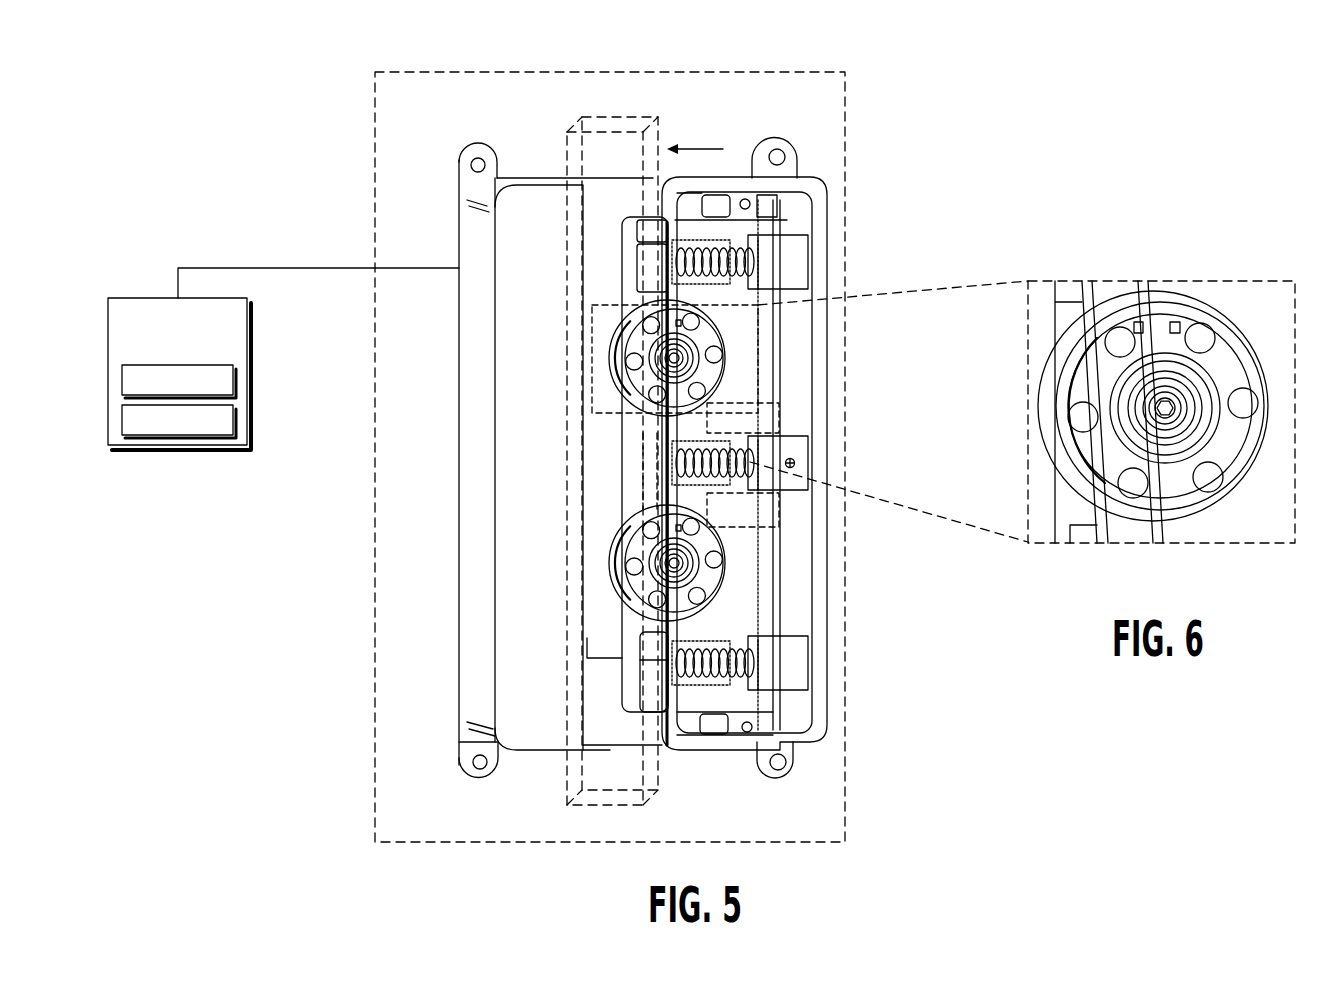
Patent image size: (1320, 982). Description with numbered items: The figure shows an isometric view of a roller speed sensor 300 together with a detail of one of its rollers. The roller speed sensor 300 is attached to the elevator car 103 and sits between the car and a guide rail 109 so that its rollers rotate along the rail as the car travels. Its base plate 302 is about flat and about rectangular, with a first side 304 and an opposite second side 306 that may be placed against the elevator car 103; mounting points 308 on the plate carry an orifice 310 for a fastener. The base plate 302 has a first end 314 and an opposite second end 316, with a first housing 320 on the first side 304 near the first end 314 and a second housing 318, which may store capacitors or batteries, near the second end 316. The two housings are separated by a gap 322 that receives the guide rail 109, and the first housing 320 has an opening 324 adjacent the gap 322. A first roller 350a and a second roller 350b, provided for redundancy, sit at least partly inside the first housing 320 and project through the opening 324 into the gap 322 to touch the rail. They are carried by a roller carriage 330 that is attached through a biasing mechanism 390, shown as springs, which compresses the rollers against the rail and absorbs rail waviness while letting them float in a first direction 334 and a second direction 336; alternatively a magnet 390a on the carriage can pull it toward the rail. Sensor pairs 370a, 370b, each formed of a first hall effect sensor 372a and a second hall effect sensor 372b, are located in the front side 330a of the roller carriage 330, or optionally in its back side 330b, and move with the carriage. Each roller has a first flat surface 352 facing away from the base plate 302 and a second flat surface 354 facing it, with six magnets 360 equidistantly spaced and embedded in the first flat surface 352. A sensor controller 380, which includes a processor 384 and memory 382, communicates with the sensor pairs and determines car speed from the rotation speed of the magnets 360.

In FIG. 5, the elevator car 103 is at (610, 422).
In FIG. 5, the roller speed sensor 300 is at (415, 133).
In FIG. 5, the guide rail 109 is at (584, 117).
In FIG. 5, the second side 306 is at (524, 460).
In FIG. 5, the second end 316 is at (458, 378).
In FIG. 5, the second housing 318 is at (497, 560).
In FIG. 5, the first housing 320 is at (779, 446).
In FIG. 6, the first housing 320 is at (1174, 528).
In FIG. 5, the first end 314 is at (817, 732).
In FIG. 5, the second direction 336 is at (798, 150).
In FIG. 5, the first direction 334 is at (693, 148).
In FIG. 5, the orifice 310 is at (773, 778).
In FIG. 5, the mounting point 308 is at (758, 760).
In FIG. 5, the gap 322 is at (603, 479).
In FIG. 5, the opening 324 is at (662, 747).
In FIG. 5, the first side 304 is at (604, 644).
In FIG. 5, the base plate 302 is at (608, 727).
In FIG. 5, the roller carriage 330 is at (640, 300).
In FIG. 6, the roller carriage 330 is at (1080, 283).
In FIG. 5, the front side 330a is at (637, 260).
In FIG. 5, the back side 330b is at (617, 275).
In FIG. 5, the biasing mechanism 390 is at (752, 268).
In FIG. 5, the magnet 390a is at (668, 513).
In FIG. 5, the first roller 350a is at (623, 382).
In FIG. 6, the first roller 350a is at (1107, 356).
In FIG. 5, the second roller 350b is at (623, 560).
In FIG. 6, the second roller 350b is at (1120, 371).
In FIG. 5, the sensor controller 380 is at (283, 359).
In FIG. 5, the memory 382 is at (235, 387).
In FIG. 5, the processor 384 is at (235, 422).
In FIG. 6, the second flat surface 354 is at (1040, 388).
In FIG. 6, the first flat surface 352 is at (1088, 455).
In FIG. 6, the sensor pair 370a is at (1120, 360).
In FIG. 6, the sensor pair 370b is at (1120, 360).
In FIG. 6, the magnet 360 is at (1082, 422).
In FIG. 6, the first hall effect sensor 372a is at (1135, 330).
In FIG. 6, the second hall effect sensor 372b is at (1180, 328).